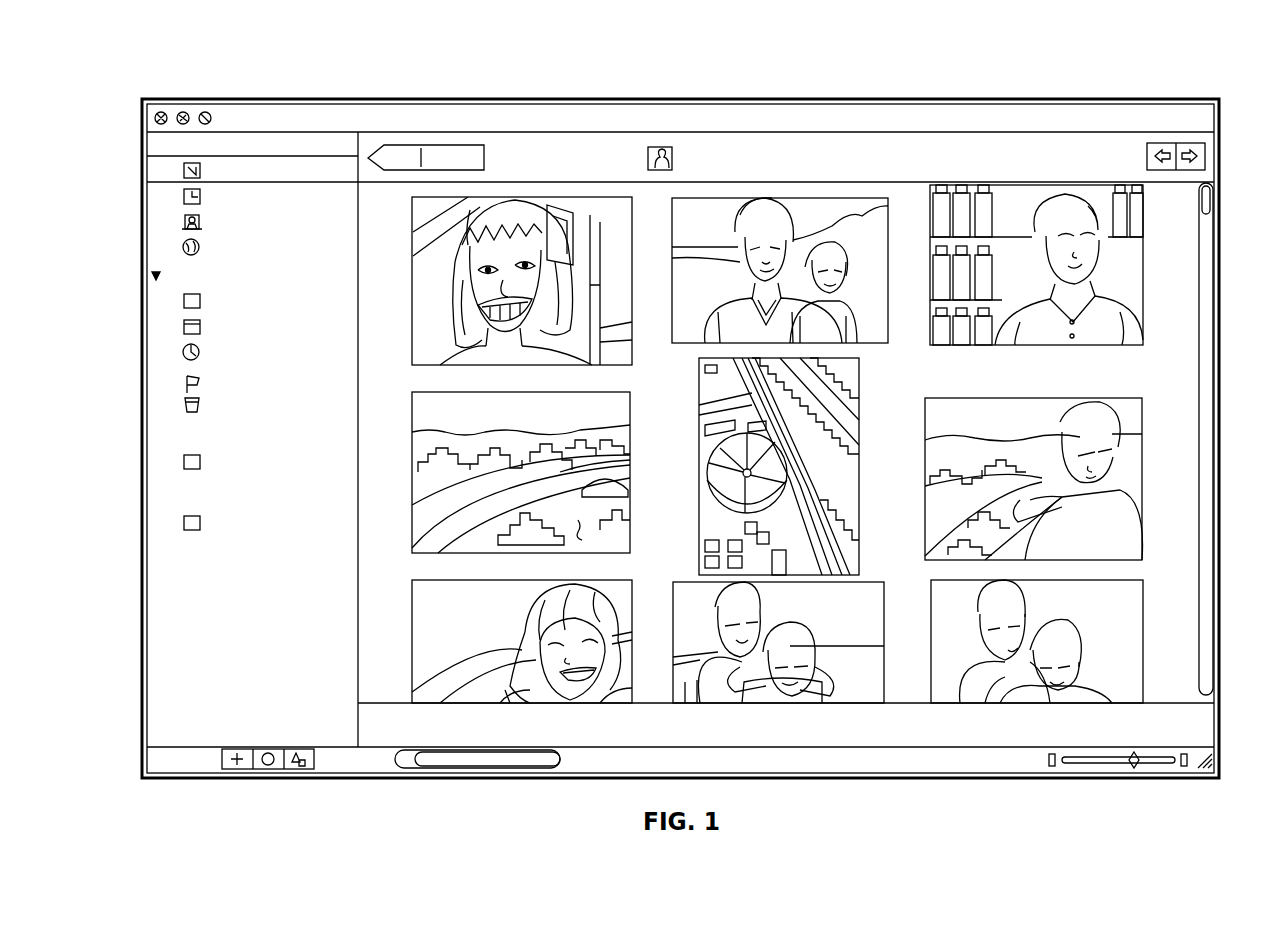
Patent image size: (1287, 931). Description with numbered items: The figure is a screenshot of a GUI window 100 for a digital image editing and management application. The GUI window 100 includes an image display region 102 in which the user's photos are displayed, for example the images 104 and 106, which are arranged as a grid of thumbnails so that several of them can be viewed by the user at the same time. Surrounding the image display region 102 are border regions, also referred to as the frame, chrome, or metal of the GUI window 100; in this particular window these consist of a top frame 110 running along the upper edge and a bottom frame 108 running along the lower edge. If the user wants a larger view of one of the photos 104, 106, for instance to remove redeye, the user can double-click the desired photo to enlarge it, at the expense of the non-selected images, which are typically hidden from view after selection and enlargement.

The GUI window 100 is at (226, 66).
The image display region 102 is at (1228, 183).
The image 104 is at (412, 290).
The image 106 is at (672, 332).
The bottom frame 108 is at (1228, 747).
The top frame 110 is at (1228, 100).